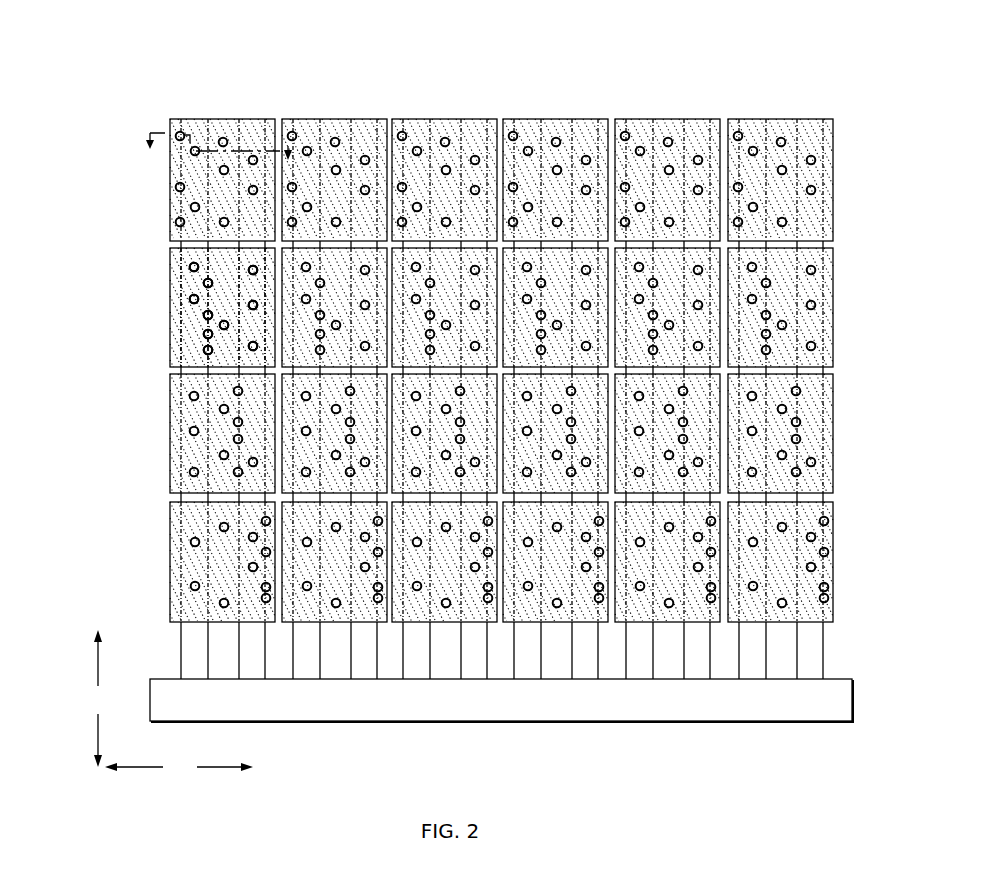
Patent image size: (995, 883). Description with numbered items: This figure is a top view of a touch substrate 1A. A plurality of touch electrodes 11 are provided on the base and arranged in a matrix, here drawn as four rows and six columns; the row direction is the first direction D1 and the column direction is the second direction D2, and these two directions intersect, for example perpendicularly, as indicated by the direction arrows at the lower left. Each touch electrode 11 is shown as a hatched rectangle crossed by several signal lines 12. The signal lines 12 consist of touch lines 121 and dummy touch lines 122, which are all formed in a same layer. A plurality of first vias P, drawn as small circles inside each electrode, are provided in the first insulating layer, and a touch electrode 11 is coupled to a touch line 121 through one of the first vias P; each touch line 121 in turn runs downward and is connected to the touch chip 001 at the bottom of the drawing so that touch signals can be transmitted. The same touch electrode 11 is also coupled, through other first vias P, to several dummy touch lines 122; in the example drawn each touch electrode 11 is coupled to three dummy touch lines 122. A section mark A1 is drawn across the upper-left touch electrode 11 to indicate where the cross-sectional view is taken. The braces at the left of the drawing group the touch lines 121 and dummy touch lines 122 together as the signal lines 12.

The touch substrate 1A is at (796, 74).
The first via P is at (170, 178).
The section line A1 is at (224, 157).
The touch electrode 11 is at (172, 278).
The signal line 12 is at (63, 313).
The touch line 121 is at (172, 320).
The dummy touch line 122 is at (172, 345).
The touch chip 001 is at (178, 687).
The first direction D1 is at (179, 768).
The second direction D2 is at (101, 698).